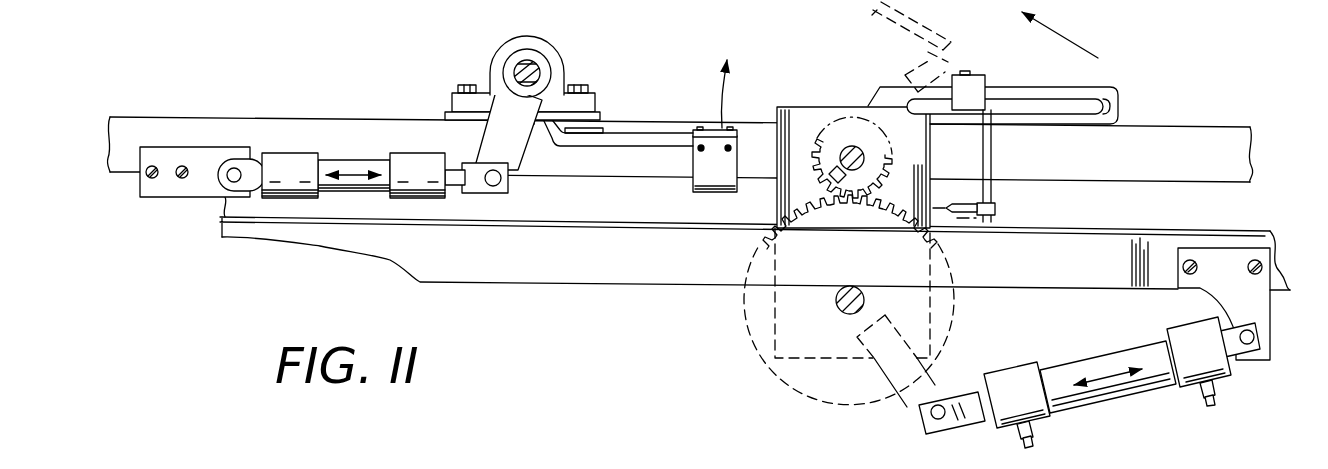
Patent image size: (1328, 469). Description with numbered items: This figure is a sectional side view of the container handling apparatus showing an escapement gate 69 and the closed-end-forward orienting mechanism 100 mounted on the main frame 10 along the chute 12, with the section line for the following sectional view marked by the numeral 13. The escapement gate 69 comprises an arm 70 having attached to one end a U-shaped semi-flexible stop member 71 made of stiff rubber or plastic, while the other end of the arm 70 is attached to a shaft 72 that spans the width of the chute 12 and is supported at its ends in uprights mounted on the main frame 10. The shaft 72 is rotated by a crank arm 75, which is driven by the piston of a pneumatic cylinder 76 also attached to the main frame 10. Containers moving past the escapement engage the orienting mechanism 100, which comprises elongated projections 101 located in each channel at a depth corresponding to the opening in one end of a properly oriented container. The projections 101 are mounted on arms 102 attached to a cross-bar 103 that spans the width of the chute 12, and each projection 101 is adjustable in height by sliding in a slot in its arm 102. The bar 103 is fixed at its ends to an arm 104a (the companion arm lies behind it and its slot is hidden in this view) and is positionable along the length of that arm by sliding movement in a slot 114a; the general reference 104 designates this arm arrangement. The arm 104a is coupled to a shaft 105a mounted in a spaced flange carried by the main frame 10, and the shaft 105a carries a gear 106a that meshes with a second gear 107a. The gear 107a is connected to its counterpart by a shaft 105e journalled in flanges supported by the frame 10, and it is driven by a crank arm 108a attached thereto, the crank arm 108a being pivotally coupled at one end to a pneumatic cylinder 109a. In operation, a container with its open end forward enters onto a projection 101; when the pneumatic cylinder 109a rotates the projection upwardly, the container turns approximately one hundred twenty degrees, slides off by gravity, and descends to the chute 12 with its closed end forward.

The main frame 10 is at (1306, 24).
The chute 12 is at (702, 97).
The section line 13- 13 is at (945, 77).
The escapement gate 69 is at (481, 69).
The arm 70 is at (630, 148).
The stop member 71 is at (728, 177).
The shaft 72 is at (530, 77).
The crank arm 75 is at (483, 145).
The pneumatic cylinder 76 is at (334, 172).
The closed-end-forward orienting mechanism 100 is at (868, 40).
The elongated projection 101 is at (958, 200).
The arm 102 is at (992, 160).
The cross-bar 103 is at (983, 78).
The slotted bar 104 is at (1013, 88).
The arm 104a is at (1112, 112).
The shaft 105a is at (845, 156).
The shaft 105e is at (850, 286).
The gear 106a is at (843, 122).
The gear 107a is at (752, 262).
The crank arm 108a is at (920, 400).
The pneumatic cylinder 109a is at (1065, 360).
The slot 114a is at (1070, 102).